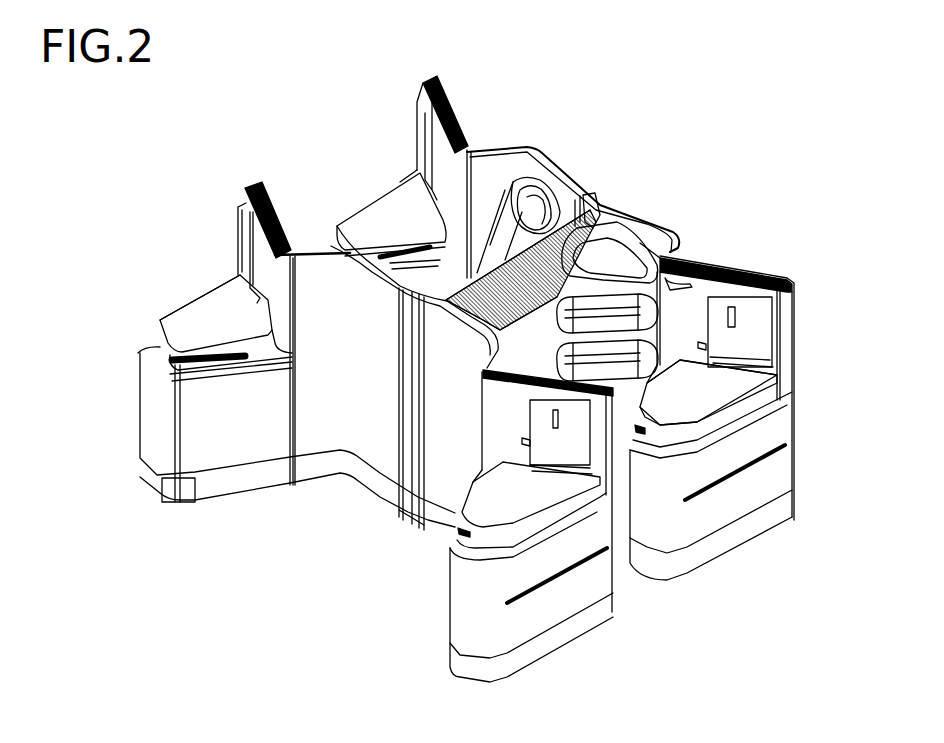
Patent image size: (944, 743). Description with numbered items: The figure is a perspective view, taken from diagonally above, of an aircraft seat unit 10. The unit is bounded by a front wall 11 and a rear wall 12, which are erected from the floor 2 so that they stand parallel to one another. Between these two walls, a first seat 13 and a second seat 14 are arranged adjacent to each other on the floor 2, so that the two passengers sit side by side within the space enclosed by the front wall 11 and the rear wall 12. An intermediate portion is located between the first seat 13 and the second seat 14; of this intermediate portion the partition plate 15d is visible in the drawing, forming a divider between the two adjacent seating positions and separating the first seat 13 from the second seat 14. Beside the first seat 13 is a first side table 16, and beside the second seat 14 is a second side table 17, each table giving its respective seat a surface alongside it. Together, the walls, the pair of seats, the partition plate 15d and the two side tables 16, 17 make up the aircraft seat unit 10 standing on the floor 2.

The floor 2 is at (465, 432).
The aircraft seat unit 10 is at (403, 117).
The front wall 11 is at (257, 184).
The rear wall 12 is at (797, 283).
The first seat 13 is at (538, 185).
The second seat 14 is at (668, 226).
The partition plate 15d is at (588, 198).
The first side table 16 is at (398, 213).
The second side table 17 is at (717, 390).